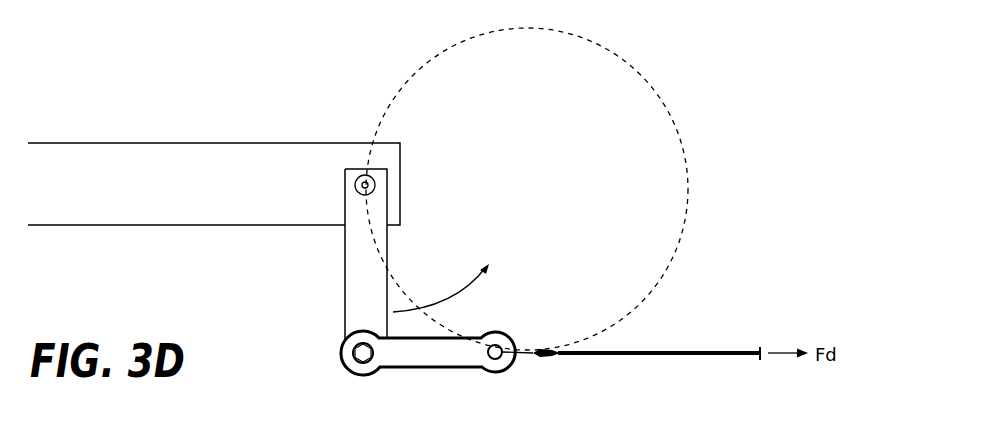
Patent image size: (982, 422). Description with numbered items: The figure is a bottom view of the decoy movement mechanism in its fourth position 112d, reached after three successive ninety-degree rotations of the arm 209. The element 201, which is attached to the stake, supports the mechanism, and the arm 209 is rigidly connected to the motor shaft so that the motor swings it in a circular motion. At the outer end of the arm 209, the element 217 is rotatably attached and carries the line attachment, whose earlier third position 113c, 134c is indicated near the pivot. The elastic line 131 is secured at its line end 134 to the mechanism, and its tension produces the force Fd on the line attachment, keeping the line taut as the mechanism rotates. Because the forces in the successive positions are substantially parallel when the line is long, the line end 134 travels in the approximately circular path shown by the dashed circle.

The element 201 is at (89, 143).
The arm 209 is at (388, 243).
The fourth position 112d is at (283, 99).
The third line attachment position 113c is at (356, 180).
The pivot axis 134c is at (365, 185).
The element 217 is at (418, 368).
The line end 134 is at (544, 358).
The cable 131 is at (643, 357).